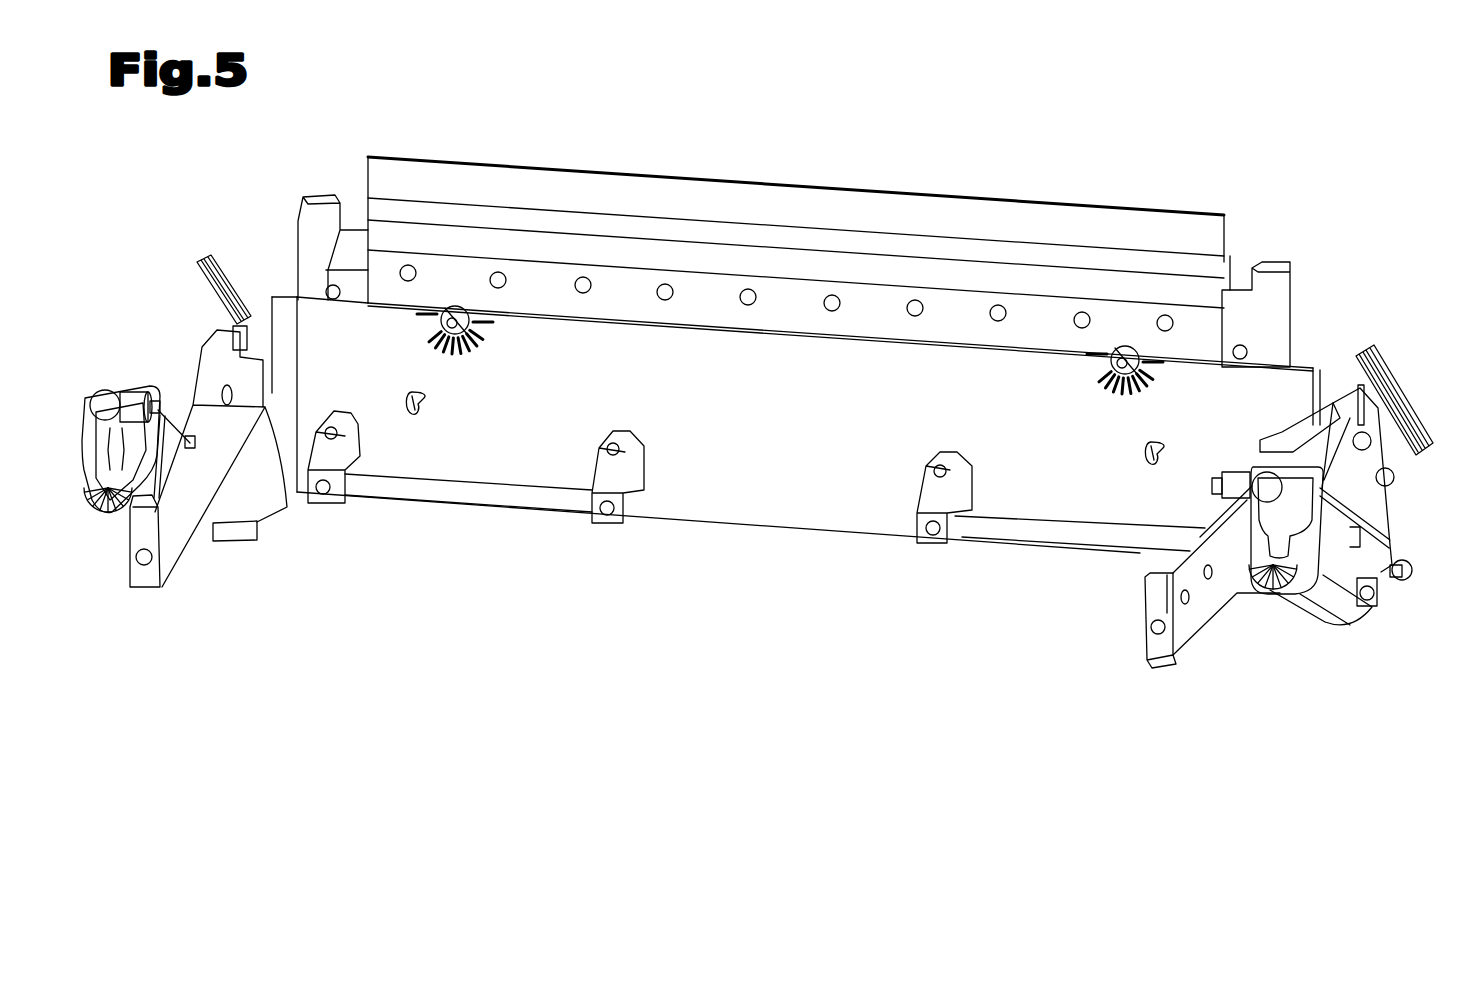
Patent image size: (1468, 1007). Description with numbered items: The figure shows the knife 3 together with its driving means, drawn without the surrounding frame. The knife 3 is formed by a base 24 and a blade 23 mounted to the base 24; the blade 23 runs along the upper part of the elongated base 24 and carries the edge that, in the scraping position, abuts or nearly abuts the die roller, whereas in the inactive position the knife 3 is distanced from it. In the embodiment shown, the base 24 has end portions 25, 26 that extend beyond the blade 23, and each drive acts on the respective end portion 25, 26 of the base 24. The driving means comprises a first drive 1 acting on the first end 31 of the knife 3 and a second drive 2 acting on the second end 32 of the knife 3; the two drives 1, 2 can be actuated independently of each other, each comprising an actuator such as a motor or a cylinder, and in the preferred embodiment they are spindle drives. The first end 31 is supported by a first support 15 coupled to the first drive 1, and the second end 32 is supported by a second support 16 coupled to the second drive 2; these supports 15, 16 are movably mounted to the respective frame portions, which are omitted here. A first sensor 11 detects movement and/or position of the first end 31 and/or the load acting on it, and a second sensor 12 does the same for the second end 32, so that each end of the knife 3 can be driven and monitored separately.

The first drive 1 is at (110, 540).
The second drive 2 is at (1322, 603).
The knife 3 is at (827, 163).
The first sensor 11 is at (217, 287).
The second sensor 12 is at (1400, 377).
The first support 15 is at (272, 393).
The second support 16 is at (1282, 420).
The blade 23 is at (655, 190).
The base 24 is at (757, 475).
The end portion 25 is at (375, 333).
The end portion 26 is at (1252, 390).
The first end 31 is at (348, 549).
The second end 32 is at (1240, 610).